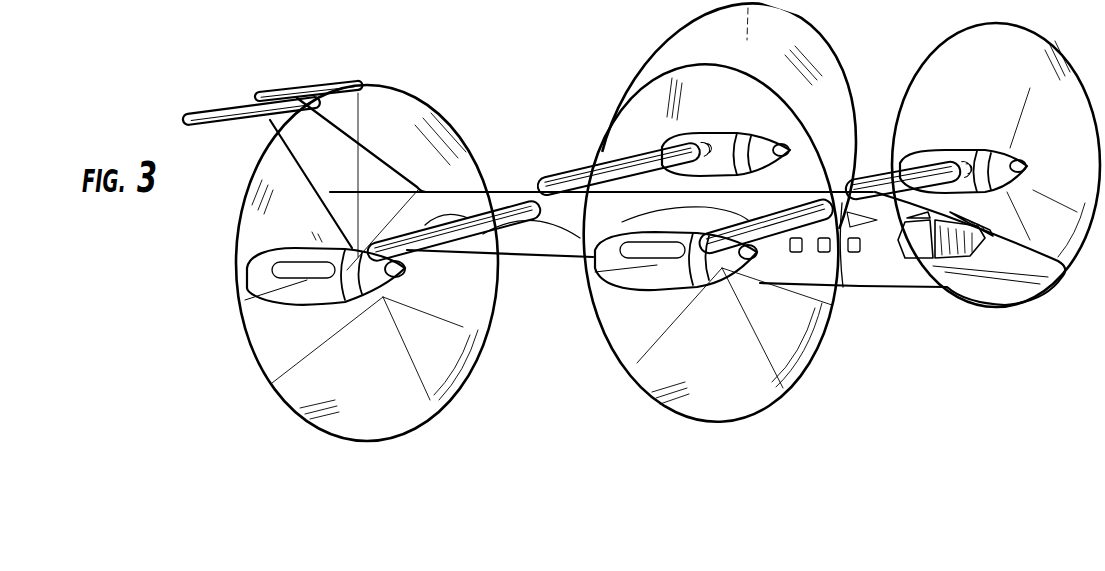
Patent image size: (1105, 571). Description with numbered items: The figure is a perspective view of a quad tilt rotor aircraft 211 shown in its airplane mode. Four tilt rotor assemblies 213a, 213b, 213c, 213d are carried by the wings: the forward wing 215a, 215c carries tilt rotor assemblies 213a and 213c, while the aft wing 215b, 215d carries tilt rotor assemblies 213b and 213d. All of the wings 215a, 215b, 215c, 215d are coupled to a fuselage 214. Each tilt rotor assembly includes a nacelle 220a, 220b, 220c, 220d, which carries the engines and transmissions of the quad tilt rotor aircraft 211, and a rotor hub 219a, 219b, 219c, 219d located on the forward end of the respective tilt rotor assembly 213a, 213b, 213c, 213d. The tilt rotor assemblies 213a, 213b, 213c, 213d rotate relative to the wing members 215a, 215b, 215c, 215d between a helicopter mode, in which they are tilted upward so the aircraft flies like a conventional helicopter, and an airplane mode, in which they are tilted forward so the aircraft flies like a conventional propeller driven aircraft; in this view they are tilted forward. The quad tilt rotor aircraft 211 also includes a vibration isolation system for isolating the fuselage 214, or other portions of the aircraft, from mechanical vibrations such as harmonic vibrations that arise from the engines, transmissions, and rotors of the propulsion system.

The quad tilt rotor aircraft 211 is at (576, 52).
The tilt rotor assembly 213a is at (997, 118).
The tilt rotor assembly 213b is at (740, 113).
The tilt rotor assembly 213c is at (676, 304).
The tilt rotor assembly 213d is at (213, 288).
The fuselage 214 is at (915, 278).
The forward wing 215a is at (873, 180).
The aft wing 215b is at (580, 182).
The forward wing 215c is at (693, 212).
The aft wing 215d is at (503, 200).
The rotor hub 219a is at (1012, 150).
The rotor hub 219b is at (768, 140).
The rotor hub 219c is at (725, 270).
The rotor hub 219d is at (380, 283).
The nacelle 220a is at (953, 150).
The nacelle 220b is at (662, 147).
The nacelle 220c is at (657, 262).
The nacelle 220d is at (301, 298).